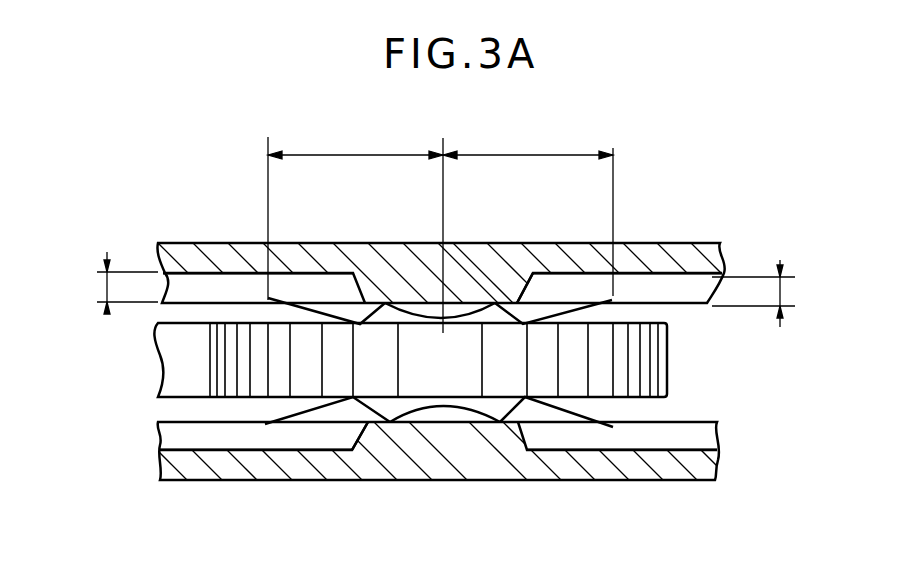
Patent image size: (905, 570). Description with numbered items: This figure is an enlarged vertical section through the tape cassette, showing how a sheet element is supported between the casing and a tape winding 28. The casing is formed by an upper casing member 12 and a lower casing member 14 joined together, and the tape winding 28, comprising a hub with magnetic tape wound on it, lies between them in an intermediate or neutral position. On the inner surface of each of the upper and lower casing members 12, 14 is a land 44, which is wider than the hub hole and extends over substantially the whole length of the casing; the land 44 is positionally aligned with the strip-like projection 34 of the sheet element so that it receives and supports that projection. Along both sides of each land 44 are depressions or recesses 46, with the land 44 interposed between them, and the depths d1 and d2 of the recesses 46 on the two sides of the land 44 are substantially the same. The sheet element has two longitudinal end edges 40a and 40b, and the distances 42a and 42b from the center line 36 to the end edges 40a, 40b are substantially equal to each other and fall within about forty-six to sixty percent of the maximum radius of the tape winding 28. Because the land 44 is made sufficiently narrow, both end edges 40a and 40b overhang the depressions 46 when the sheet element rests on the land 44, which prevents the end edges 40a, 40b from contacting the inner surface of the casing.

The upper casing member 12 is at (697, 262).
The lower casing member 14 is at (674, 481).
The tape winding 28 is at (173, 362).
The strip-like projection 34 is at (468, 313).
The center line 36 is at (437, 317).
The end edge 40a is at (270, 299).
The end edge 40b is at (593, 303).
The distance 42a is at (355, 227).
The distance 42b is at (528, 208).
The land 44 is at (530, 282).
The depression 46 is at (694, 303).
The depth d1 is at (113, 283).
The depth d2 is at (772, 293).